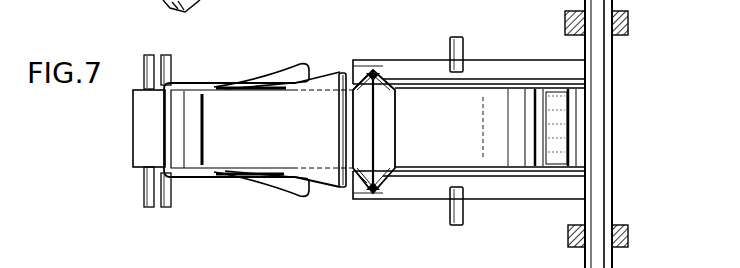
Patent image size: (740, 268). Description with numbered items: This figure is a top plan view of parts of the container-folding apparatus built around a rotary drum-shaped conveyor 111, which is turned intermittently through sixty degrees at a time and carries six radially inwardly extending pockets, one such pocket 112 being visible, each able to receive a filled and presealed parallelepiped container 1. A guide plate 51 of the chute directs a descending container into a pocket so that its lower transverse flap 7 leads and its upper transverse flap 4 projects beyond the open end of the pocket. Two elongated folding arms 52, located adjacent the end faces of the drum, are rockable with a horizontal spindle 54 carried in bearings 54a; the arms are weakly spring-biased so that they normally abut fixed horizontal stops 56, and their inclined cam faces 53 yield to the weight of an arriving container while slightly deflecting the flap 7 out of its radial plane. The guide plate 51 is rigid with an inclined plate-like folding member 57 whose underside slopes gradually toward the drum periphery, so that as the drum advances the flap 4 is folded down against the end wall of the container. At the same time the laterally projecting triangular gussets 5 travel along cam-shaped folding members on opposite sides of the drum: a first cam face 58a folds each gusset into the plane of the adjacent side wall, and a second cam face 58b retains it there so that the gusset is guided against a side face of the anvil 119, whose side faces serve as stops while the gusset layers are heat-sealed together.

The parallelepiped container 1 is at (400, 122).
The transverse flap 4 is at (375, 163).
The triangular gussets 5 is at (364, 80).
The second transverse flap 7 is at (383, 72).
The guide plate 51 is at (348, 72).
The folding arms 52 is at (428, 67).
The cam faces 53 is at (377, 64).
The spindle 54 is at (603, 163).
The bearings 54a is at (625, 25).
The stops 56 is at (462, 37).
The folding member 57 is at (313, 100).
The first cam face 58a is at (272, 76).
The second cam face 58b is at (218, 87).
The rotary drum-shaped conveyor 111 is at (493, 97).
The pockets 112 is at (563, 107).
The anvil 119 is at (143, 130).